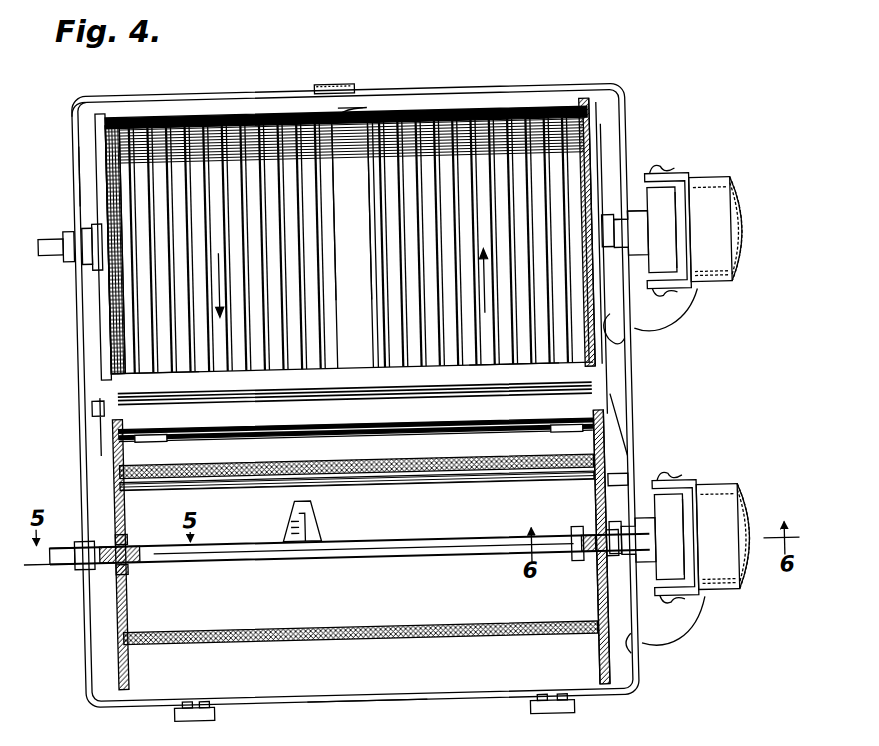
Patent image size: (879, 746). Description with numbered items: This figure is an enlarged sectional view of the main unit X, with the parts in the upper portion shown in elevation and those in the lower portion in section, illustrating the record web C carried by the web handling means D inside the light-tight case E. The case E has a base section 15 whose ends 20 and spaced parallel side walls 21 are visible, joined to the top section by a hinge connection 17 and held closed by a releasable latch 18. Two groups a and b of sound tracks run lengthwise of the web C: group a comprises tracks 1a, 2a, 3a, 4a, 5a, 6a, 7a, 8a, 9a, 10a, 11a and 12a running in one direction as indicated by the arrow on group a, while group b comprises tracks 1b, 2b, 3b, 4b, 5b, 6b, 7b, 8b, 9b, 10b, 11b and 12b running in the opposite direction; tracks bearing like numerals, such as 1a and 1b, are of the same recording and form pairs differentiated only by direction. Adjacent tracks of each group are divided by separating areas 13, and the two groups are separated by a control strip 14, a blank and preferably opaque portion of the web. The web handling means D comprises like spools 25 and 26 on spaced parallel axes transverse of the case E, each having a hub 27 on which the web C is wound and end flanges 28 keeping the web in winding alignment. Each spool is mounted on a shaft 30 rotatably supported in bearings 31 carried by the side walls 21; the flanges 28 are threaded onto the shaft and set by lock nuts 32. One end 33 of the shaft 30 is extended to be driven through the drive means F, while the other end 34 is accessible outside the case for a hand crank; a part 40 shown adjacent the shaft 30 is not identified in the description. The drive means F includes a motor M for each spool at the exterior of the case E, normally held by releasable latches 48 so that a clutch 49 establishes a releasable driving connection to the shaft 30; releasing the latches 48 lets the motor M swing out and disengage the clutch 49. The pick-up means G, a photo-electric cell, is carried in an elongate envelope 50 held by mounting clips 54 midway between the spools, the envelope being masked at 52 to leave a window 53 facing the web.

The sound track 1a is at (134, 118).
The sound track 2a is at (154, 118).
The sound track 3a is at (172, 118).
The sound track 4a is at (191, 118).
The sound track 5a is at (210, 118).
The sound track 6a is at (247, 118).
The sound track 7a is at (265, 118).
The sound track 8a is at (284, 118).
The sound track 9a is at (303, 118).
The sound track 10a is at (321, 118).
The sound track 11a is at (338, 118).
The sound track 12a is at (356, 110).
The group of sound tracks a is at (228, 118).
The sound track 1b is at (375, 118).
The sound track 2b is at (386, 118).
The sound track 3b is at (405, 118).
The sound track 4b is at (423, 118).
The sound track 5b is at (441, 118).
The sound track 6b is at (478, 118).
The sound track 7b is at (496, 118).
The sound track 8b is at (514, 118).
The sound track 9b is at (532, 118).
The sound track 10b is at (551, 118).
The sound track 11b is at (569, 118).
The sound track 12b is at (592, 116).
The group of sound tracks b is at (460, 118).
The releasable latch 18 is at (350, 84).
The ends 20 is at (632, 91).
The side walls 21 is at (84, 336).
The spool 25 is at (600, 118).
The separating areas 13 is at (232, 370).
The control strip 14 is at (366, 370).
The end flanges 28 is at (118, 275).
The spool 26 is at (606, 446).
The bearings 31 is at (70, 226).
The releasable latches 48 is at (668, 183).
The clutch 49 is at (640, 240).
The envelope 50 is at (398, 432).
The masking 52 is at (230, 436).
The window 53 is at (326, 432).
The mounting clips 54 is at (158, 437).
The shaft 30 is at (410, 540).
The lock nuts 32 is at (120, 538).
The shaft end 33 is at (578, 541).
The shaft end 34 is at (74, 533).
The bracket 40 is at (318, 532).
The hub 27 is at (402, 626).
The hinge connection 17 is at (205, 716).
The base section 15 is at (354, 703).
The unit X is at (76, 109).
The record web C is at (124, 142).
The case E is at (82, 186).
The drive means F is at (714, 172).
The motor M is at (752, 274).
The pick-up means G is at (582, 384).
The web handling means D is at (110, 617).